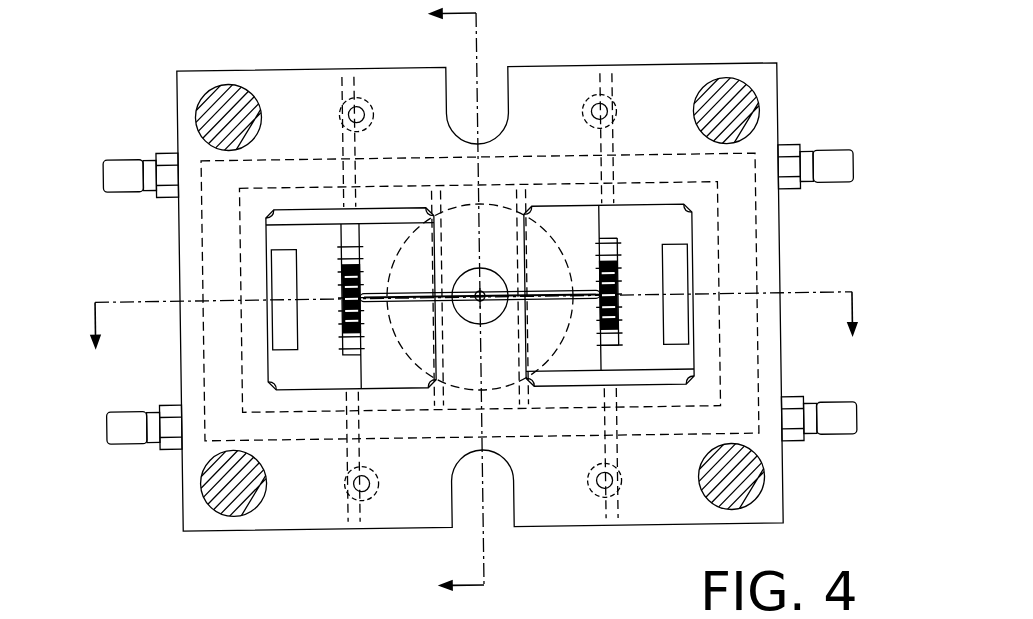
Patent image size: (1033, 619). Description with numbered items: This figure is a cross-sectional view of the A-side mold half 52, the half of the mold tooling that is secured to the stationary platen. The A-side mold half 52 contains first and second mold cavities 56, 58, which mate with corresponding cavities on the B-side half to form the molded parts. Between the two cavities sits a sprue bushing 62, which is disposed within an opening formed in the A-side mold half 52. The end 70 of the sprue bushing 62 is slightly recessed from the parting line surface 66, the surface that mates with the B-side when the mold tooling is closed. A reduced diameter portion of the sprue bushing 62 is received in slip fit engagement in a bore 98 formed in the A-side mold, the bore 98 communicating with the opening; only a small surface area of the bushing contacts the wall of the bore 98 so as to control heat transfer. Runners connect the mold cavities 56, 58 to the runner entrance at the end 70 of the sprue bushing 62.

The A-side mold half 52 is at (497, 303).
The first mold cavity 56 is at (614, 262).
The second mold cavity 58 is at (343, 261).
The sprue bushing 62 is at (487, 266).
The parting line surface 66 is at (766, 367).
The end of the sprue bushing 70 is at (497, 311).
The bore 98 is at (462, 311).